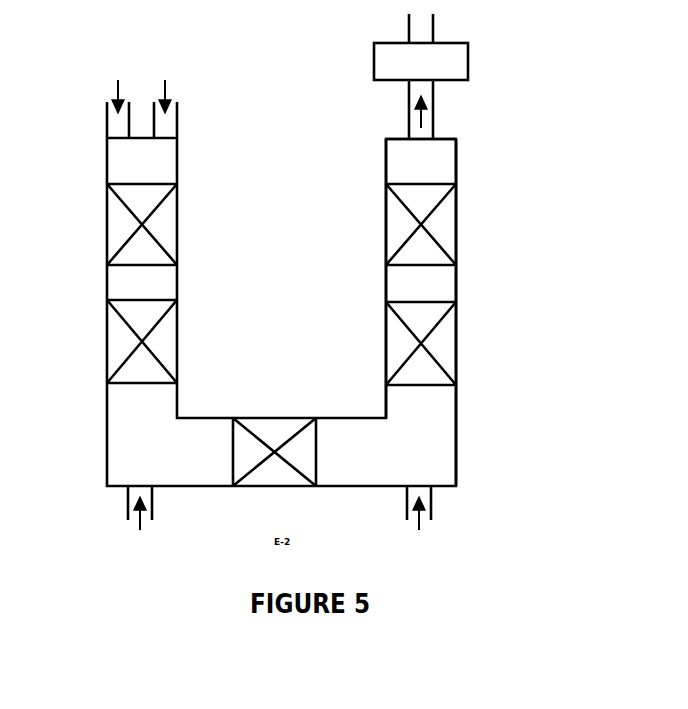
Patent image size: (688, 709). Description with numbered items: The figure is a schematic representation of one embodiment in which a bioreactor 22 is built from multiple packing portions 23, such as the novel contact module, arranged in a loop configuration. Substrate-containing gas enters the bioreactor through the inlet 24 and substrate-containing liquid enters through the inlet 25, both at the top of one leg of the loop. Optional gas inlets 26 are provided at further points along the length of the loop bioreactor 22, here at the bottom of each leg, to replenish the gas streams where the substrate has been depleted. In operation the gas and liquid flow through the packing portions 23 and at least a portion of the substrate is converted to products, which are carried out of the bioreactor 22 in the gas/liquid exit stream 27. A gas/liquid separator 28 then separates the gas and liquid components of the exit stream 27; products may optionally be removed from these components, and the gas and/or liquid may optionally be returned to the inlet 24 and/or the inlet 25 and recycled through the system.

The bioreactor 22 is at (456, 287).
The packing portions 23 is at (247, 417).
The gas inlet 24 is at (107, 115).
The liquid inlet 25 is at (177, 115).
The gas inlets 26 is at (128, 520).
The gas/liquid exit stream 27 is at (428, 117).
The gas/liquid separator 28 is at (468, 57).